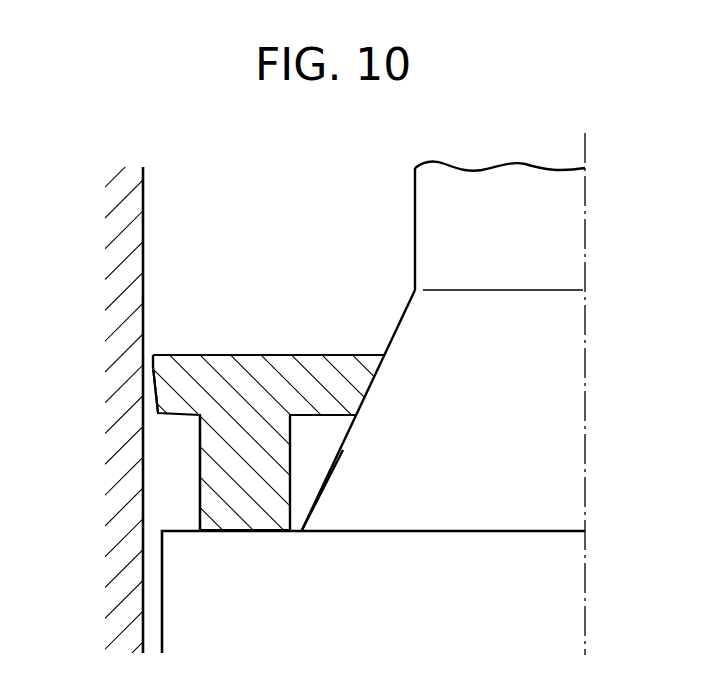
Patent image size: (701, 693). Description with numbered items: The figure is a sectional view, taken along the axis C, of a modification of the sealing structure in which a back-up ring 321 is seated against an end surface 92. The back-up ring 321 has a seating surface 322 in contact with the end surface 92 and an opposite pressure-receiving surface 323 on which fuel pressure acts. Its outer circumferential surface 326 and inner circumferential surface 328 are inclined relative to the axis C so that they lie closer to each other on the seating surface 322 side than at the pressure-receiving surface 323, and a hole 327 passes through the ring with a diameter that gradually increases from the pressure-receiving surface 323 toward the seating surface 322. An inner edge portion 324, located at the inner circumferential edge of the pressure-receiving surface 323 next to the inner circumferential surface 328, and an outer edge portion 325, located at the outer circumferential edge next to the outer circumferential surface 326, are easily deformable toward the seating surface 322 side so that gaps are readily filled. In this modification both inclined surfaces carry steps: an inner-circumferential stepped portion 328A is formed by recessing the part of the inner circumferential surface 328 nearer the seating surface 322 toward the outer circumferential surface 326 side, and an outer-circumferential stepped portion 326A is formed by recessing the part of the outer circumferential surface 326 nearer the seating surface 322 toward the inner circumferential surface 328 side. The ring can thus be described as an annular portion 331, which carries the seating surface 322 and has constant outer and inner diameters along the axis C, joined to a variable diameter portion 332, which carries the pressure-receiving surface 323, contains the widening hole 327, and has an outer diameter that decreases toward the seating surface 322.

The back-up ring 321 is at (197, 331).
The seating surface 322 is at (235, 533).
The pressure-receiving surface 323 is at (243, 354).
The inner edge portion 324 is at (365, 355).
The outer edge portion 325 is at (153, 365).
The outer circumferential surface 326 is at (153, 388).
The outer-circumferential stepped portion 326A is at (200, 462).
The hole 327 is at (376, 376).
The inner circumferential surface 328 is at (362, 398).
The inner-circumferential stepped portion 328A is at (290, 476).
The annular portion 331 is at (257, 508).
The variable diameter portion 332 is at (263, 368).
The end surface 92 is at (182, 531).
The axis C is at (587, 143).